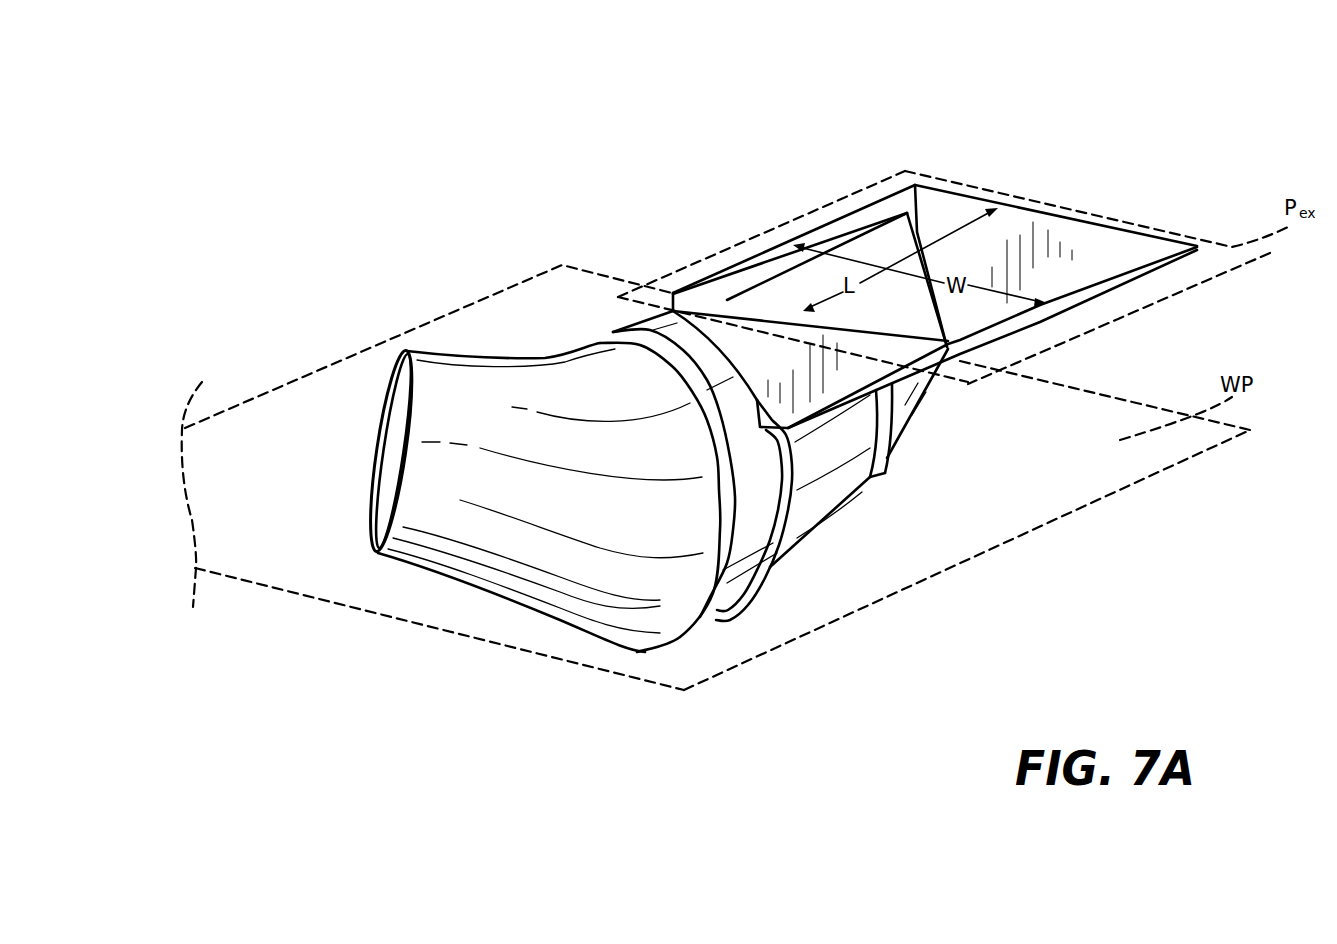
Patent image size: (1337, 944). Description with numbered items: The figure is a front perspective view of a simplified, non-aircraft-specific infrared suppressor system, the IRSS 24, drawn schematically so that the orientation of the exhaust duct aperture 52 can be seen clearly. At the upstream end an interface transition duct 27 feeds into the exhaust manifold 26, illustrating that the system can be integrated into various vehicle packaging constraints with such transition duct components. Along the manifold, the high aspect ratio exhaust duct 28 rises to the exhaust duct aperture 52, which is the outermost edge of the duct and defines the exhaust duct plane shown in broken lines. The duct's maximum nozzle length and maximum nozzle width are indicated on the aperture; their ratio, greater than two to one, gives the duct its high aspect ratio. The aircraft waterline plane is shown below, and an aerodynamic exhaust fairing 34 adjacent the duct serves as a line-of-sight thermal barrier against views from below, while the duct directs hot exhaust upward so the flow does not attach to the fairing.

The IR suppressor system (IRSS) 24 is at (870, 127).
The exhaust manifold 26 is at (833, 493).
The interface transition duct 27 is at (610, 610).
The high aspect ratio exhaust duct 28 is at (1163, 194).
The aerodynamic exhaust fairing 34 is at (713, 640).
The exhaust duct aperture 52 is at (1012, 212).